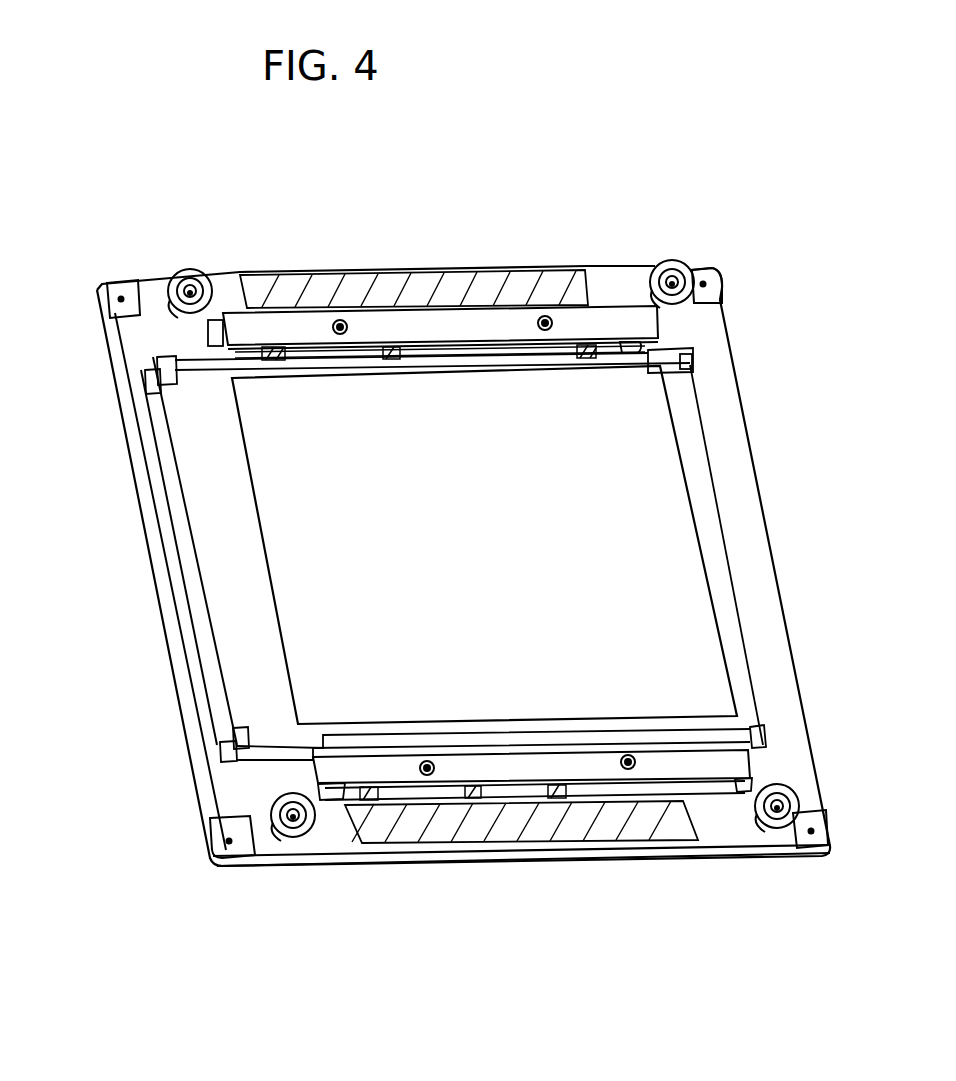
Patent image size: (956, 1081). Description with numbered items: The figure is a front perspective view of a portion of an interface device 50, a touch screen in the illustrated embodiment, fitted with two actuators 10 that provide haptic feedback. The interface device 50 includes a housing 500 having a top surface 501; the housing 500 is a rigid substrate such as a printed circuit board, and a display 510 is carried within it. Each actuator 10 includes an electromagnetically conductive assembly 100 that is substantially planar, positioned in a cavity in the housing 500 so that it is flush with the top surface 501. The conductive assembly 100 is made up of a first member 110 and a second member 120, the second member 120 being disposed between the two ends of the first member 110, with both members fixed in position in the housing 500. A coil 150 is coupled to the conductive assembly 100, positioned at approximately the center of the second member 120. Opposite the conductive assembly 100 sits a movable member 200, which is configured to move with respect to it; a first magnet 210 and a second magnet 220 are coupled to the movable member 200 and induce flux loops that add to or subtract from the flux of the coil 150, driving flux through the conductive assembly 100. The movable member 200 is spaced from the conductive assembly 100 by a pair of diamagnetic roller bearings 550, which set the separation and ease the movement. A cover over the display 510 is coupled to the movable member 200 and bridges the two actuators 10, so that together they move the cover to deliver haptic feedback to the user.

The actuator 10 is at (481, 262).
The interface device 50 is at (90, 274).
The electromagnetically conductive assembly 100 is at (452, 833).
The first member 110 is at (318, 287).
The second member 120 is at (390, 360).
The coil 150 is at (440, 350).
The movable member 200 is at (442, 332).
The first magnet 210 is at (512, 354).
The second magnet 220 is at (298, 366).
The housing 500 is at (607, 282).
The top surface 501 is at (740, 826).
The display 510 is at (472, 535).
The diamagnetic roller bearings 550 is at (212, 330).